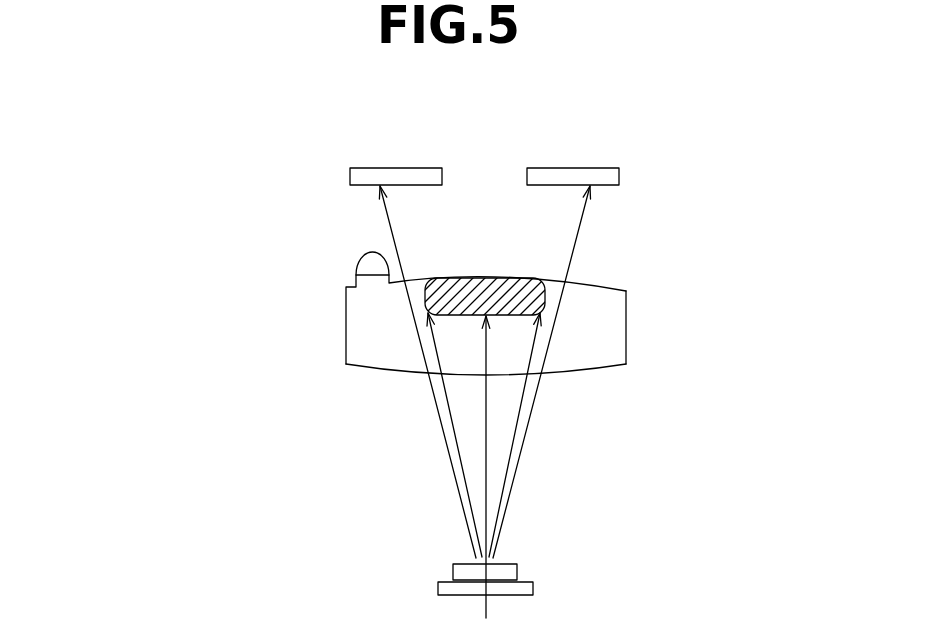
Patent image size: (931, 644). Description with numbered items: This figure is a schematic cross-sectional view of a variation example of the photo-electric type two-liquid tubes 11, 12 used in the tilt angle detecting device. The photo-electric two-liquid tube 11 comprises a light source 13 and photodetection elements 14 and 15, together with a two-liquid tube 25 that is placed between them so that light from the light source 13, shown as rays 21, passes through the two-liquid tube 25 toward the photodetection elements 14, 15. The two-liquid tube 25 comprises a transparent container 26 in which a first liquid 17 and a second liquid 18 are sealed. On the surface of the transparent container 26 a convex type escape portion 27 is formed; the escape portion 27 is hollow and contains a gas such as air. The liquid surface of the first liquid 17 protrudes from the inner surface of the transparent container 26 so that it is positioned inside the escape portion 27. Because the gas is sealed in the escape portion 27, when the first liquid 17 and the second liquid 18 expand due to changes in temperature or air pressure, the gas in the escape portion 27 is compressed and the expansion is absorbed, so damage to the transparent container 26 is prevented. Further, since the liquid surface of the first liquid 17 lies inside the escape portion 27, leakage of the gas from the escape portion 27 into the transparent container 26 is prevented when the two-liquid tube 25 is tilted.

The photo-electric type two-liquid tube 11 is at (425, 296).
The photo-electric type two-liquid tube 12 is at (290, 229).
The light source 13 is at (452, 568).
The photodetection element 14 is at (407, 167).
The photodetection element 15 is at (567, 167).
The first liquid 17 is at (367, 327).
The second liquid 18 is at (500, 282).
The light ray 21 is at (527, 435).
The two-liquid tube 25 is at (393, 372).
The transparent container 26 is at (627, 315).
The escape portion 27 is at (363, 253).